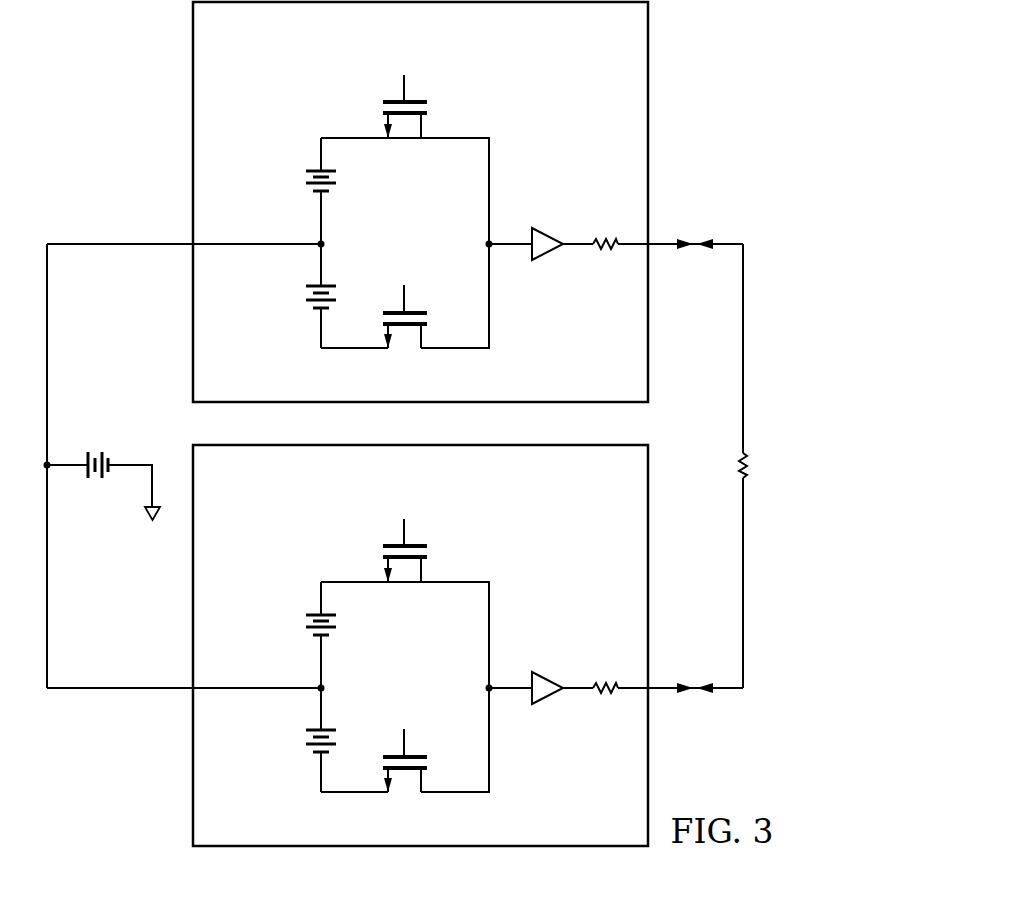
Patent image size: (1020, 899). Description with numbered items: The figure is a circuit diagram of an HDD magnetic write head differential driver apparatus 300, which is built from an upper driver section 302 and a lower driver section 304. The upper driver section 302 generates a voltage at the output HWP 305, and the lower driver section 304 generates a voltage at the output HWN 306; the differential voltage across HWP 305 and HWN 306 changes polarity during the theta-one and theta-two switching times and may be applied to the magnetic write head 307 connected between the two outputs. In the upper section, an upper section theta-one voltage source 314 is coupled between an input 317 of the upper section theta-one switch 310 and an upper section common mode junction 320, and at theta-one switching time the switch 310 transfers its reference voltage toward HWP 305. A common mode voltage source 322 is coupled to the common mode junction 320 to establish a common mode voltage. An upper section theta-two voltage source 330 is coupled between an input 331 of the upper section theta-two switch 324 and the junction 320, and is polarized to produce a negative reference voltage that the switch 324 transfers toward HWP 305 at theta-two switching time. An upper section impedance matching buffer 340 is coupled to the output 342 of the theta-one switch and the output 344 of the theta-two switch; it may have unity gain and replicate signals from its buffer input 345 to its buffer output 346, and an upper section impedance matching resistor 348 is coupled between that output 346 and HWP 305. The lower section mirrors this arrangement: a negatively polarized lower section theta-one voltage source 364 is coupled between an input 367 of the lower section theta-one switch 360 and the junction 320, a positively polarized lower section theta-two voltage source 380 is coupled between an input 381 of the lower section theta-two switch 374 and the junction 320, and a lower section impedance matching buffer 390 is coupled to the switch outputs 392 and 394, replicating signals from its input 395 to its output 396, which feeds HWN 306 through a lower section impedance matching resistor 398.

The HDD magnetic write head differential driver apparatus 300 is at (714, 97).
The upper driver section 302 is at (193, 42).
The lower driver section 304 is at (193, 805).
The output HWP 305 is at (695, 255).
The output HWN 306 is at (695, 699).
The magnetic write head 307 is at (738, 462).
The upper section θ1 switch 310 is at (447, 101).
The upper section θ1 voltage source VS(Uθ1) 314 is at (346, 181).
The input of the upper section θ1 switch 317 is at (343, 137).
The upper section common mode junction 320 is at (327, 244).
The common mode voltage source VS(CM) 322 is at (97, 495).
The upper section θ2 switch 324 is at (428, 298).
The upper section θ2 voltage source VS(Uθ2) 330 is at (295, 319).
The input of the upper section θ2 switch 331 is at (343, 350).
The upper section impedance matching buffer 340 is at (548, 259).
The output of the upper section θ1 switch 342 is at (470, 137).
The output of the upper section θ2 switch 344 is at (468, 350).
The buffer input 345 is at (508, 243).
The buffer output 346 is at (575, 243).
The upper section impedance matching resistor 348 is at (604, 248).
The lower section θ1 switch 360 is at (428, 742).
The lower section θ1 negatively polarized voltage source VS(Lθ1) 364 is at (295, 763).
The input of the lower section θ1 switch 367 is at (343, 794).
The lower section θ2 switch 374 is at (447, 545).
The lower section θ2 positively polarized voltage source VS(Lθ2) 380 is at (346, 625).
The input of the lower section θ2 switch 381 is at (343, 581).
The lower section impedance matching buffer 390 is at (548, 703).
The output of the lower section θ1 switch 392 is at (468, 794).
The output of the lower section θ2 switch 394 is at (470, 581).
The buffer input 395 is at (508, 687).
The buffer output 396 is at (575, 687).
The lower section impedance matching resistor 398 is at (604, 692).